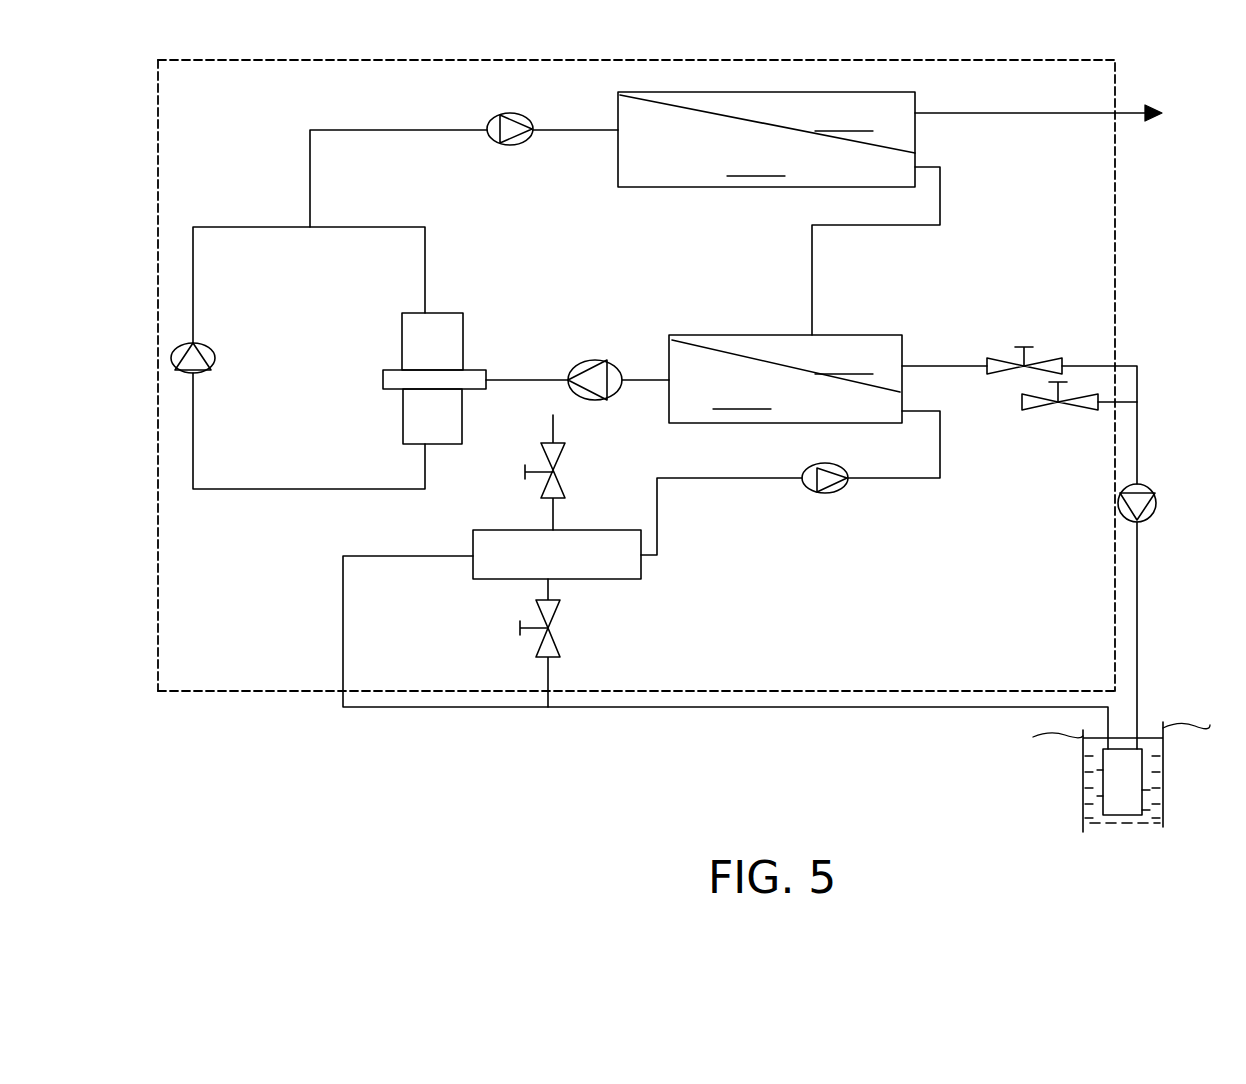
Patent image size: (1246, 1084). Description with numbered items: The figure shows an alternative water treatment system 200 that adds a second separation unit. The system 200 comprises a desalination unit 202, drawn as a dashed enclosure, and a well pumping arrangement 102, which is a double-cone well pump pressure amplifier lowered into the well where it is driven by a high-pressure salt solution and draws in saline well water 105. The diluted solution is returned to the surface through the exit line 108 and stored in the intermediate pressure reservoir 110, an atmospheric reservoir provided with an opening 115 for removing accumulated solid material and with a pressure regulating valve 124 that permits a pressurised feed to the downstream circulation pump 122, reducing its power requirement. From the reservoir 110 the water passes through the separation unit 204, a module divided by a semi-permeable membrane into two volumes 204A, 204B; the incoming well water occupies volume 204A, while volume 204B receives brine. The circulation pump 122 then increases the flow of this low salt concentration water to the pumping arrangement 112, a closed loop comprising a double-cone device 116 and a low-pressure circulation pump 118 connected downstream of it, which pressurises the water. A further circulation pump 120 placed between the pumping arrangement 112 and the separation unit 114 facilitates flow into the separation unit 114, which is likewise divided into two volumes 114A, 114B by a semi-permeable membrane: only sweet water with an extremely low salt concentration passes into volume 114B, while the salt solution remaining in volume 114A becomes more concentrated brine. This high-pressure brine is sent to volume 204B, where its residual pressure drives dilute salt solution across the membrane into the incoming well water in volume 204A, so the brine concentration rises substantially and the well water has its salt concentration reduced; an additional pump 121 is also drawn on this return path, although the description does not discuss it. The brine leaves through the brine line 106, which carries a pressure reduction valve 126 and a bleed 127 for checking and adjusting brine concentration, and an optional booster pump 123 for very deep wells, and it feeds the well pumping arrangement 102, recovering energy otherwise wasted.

The system 200 is at (590, 34).
The desalination unit 202 is at (305, 692).
The pumping arrangement 112 is at (513, 256).
The separation unit 114 is at (766, 164).
The volume 114A is at (708, 188).
The volume 114B is at (846, 119).
The double-cone device 116 is at (402, 335).
The circulation pump 118 is at (207, 345).
The circulation pump 120 is at (517, 145).
The pump 121 is at (827, 495).
The circulation pump 122 is at (587, 362).
The booster pump 123 is at (1158, 505).
The pressure regulating valve 124 is at (556, 470).
The opening 115 is at (553, 657).
The pressure reduction valve 126 is at (1043, 360).
The bleed 127 is at (1075, 405).
The brine line 106 is at (940, 362).
The exit line 108 is at (525, 707).
The intermediate pressure reservoir 110 is at (595, 531).
The separation unit 204 is at (785, 352).
The volume 204A is at (744, 397).
The volume 204B is at (846, 362).
The well pumping arrangement 102 is at (1143, 780).
The well water 105 is at (1095, 798).